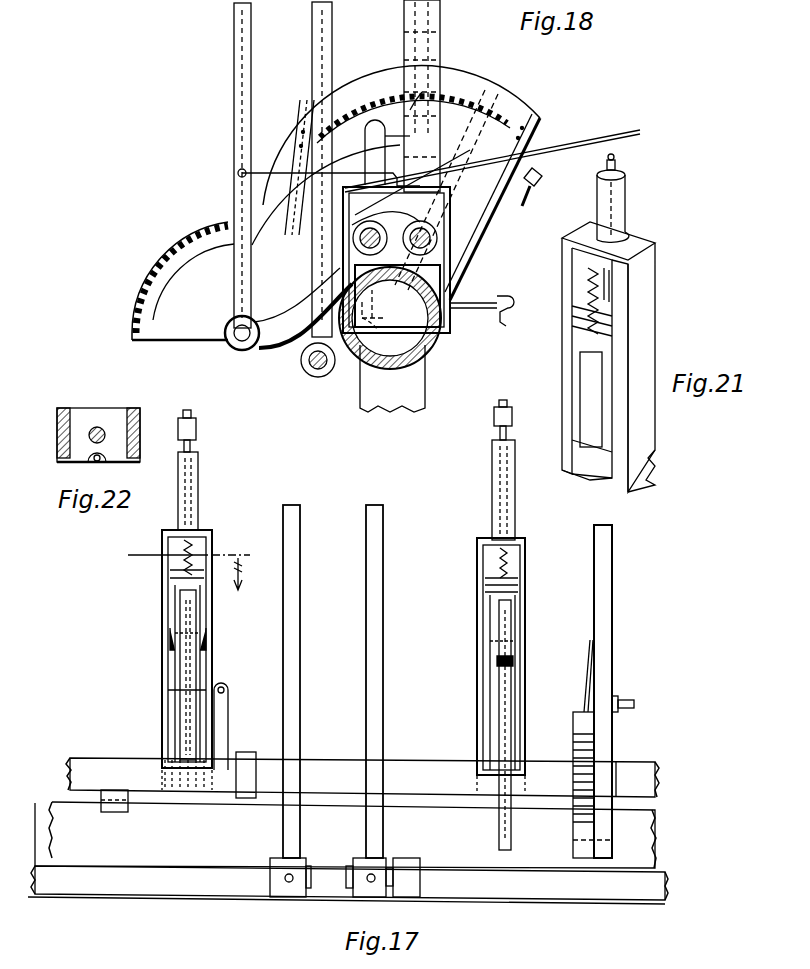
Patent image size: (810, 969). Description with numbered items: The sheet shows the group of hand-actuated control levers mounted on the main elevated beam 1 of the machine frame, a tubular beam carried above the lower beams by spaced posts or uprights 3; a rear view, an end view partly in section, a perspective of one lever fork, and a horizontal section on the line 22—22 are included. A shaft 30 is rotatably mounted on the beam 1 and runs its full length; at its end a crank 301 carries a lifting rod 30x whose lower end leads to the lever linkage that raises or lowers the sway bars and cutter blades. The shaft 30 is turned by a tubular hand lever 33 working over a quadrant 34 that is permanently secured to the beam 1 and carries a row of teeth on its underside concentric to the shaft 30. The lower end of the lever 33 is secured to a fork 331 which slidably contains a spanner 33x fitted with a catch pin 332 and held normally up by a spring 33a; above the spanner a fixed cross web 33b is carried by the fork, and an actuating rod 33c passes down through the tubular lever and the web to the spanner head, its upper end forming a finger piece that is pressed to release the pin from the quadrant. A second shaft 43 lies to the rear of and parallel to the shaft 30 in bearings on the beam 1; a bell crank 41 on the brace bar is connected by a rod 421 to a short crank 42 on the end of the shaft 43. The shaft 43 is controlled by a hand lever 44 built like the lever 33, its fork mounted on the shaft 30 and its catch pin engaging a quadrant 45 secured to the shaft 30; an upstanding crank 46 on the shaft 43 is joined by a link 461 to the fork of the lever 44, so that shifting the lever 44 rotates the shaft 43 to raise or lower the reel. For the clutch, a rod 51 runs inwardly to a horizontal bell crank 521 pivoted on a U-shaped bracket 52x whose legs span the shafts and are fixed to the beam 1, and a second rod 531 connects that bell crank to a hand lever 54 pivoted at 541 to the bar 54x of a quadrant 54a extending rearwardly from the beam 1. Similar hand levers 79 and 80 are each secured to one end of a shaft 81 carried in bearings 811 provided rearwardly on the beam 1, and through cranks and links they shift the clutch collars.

In FIG. 18, the main elevated beam 1 is at (396, 362).
In FIG. 17, the main elevated beam 1 is at (134, 858).
In FIG. 18, the posts or uprights 3 is at (360, 398).
In FIG. 17, the section line 22— 22 is at (187, 553).
In FIG. 18, the shaft 30 is at (440, 250).
In FIG. 17, the shaft 30 is at (78, 760).
In FIG. 18, the crank 301 is at (543, 178).
In FIG. 18, the lifting rod 30x is at (524, 207).
In FIG. 18, the hand lever 33 is at (422, 96).
In FIG. 21, the hand lever 33 is at (626, 208).
In FIG. 17, the hand lever 33 is at (493, 474).
In FIG. 18, the fork 331 is at (385, 72).
In FIG. 21, the fork 331 is at (646, 348).
In FIG. 22, the fork 331 is at (62, 398).
In FIG. 17, the fork 331 is at (478, 606).
In FIG. 18, the catch pin 332 is at (428, 92).
In FIG. 21, the catch pin 332 is at (595, 428).
In FIG. 17, the catch pin 332 is at (520, 640).
In FIG. 21, the spring 33a is at (600, 316).
In FIG. 22, the spring 33a is at (94, 458).
In FIG. 17, the spring 33a is at (188, 548).
In FIG. 21, the cross web 33b is at (586, 302).
In FIG. 22, the cross web 33b is at (102, 398).
In FIG. 17, the cross web 33b is at (512, 584).
In FIG. 21, the actuating rod 33c is at (617, 165).
In FIG. 22, the actuating rod 33c is at (104, 432).
In FIG. 17, the actuating rod 33c is at (191, 414).
In FIG. 21, the spanner 33x is at (604, 420).
In FIG. 17, the spanner 33x is at (490, 630).
In FIG. 18, the quadrant 34 is at (520, 106).
In FIG. 17, the quadrant 34 is at (508, 626).
In FIG. 18, the bell crank 41 is at (498, 320).
In FIG. 18, the short crank 42 is at (390, 318).
In FIG. 18, the rod 421 is at (480, 302).
In FIG. 18, the shaft 43 is at (365, 243).
In FIG. 17, the shaft 43 is at (420, 762).
In FIG. 17, the hand lever 44 is at (198, 484).
In FIG. 18, the quadrant 45 is at (285, 160).
In FIG. 17, the quadrant 45 is at (182, 685).
In FIG. 18, the upstanding crank 46 is at (318, 112).
In FIG. 17, the upstanding crank 46 is at (228, 724).
In FIG. 18, the link 461 is at (405, 138).
In FIG. 17, the link 461 is at (221, 684).
In FIG. 18, the rod 51 is at (598, 150).
In FIG. 18, the bell crank 521 is at (478, 175).
In FIG. 17, the bell crank 521 is at (632, 702).
In FIG. 18, the U-shaped bracket 52x is at (462, 210).
In FIG. 18, the second rod 531 is at (255, 170).
In FIG. 18, the hand lever 54 is at (236, 46).
In FIG. 17, the hand lever 54 is at (612, 602).
In FIG. 18, the pivot 541 is at (236, 343).
In FIG. 18, the quadrant 54a is at (196, 232).
In FIG. 17, the quadrant 54a is at (574, 748).
In FIG. 18, the bar 54x is at (195, 325).
In FIG. 17, the hand lever 79 is at (293, 522).
In FIG. 17, the hand lever 80 is at (375, 522).
In FIG. 18, the shaft 81 is at (306, 366).
In FIG. 17, the shaft 81 is at (98, 852).
In FIG. 18, the bearings 811 is at (318, 378).
In FIG. 17, the bearings 811 is at (256, 880).